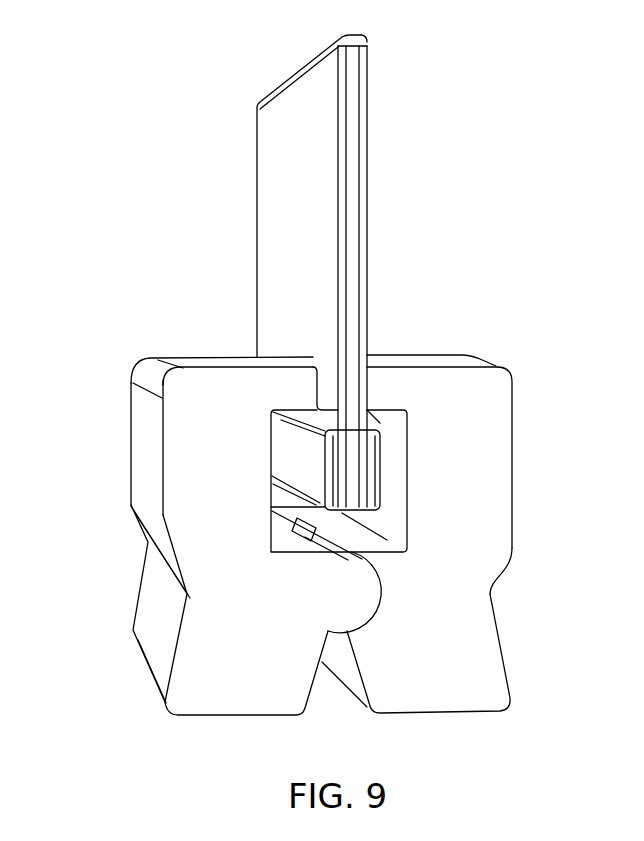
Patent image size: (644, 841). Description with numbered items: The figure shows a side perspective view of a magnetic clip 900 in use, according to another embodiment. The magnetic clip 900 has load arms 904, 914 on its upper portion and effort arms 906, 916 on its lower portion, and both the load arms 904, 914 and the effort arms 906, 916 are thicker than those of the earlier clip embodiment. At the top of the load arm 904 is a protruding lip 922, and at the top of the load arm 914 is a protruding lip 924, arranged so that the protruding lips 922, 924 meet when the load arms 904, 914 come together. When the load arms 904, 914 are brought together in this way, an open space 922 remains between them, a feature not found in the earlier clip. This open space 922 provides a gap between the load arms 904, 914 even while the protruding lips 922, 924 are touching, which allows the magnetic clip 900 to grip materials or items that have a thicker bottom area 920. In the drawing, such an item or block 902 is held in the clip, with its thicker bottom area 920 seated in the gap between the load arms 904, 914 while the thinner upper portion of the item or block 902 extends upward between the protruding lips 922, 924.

The magnetic clip 900 is at (120, 365).
The item or block 902 is at (248, 134).
The load arm 904 is at (130, 467).
The effort arm 906 is at (130, 632).
The load arm 914 is at (513, 462).
The effort arm 916 is at (508, 640).
The thicker bottom area 920 is at (380, 464).
The protruding lip 922 is at (282, 384).
The protruding lip 924 is at (385, 372).